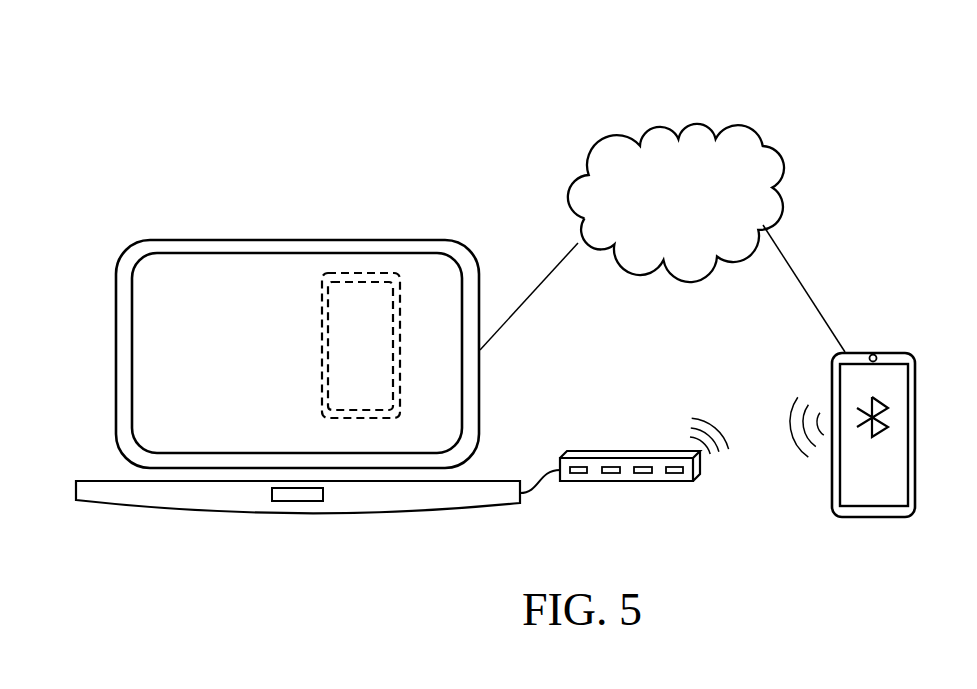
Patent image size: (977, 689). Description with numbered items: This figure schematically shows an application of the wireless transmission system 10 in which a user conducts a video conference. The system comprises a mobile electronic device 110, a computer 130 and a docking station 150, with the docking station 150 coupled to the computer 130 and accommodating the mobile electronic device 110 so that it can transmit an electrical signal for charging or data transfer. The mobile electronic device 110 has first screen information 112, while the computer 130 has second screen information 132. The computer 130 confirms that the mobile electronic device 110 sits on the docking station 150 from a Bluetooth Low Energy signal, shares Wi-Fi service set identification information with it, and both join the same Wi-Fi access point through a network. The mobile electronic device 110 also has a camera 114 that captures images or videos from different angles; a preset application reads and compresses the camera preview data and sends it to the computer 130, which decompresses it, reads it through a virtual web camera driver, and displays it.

The wireless transmission system 10 is at (916, 53).
The mobile electronic device 110 is at (902, 352).
The first screen information 112 is at (357, 312).
The camera 114 is at (871, 353).
The computer 130 is at (408, 238).
The second screen information 132 is at (162, 285).
The docking station 150 is at (625, 458).